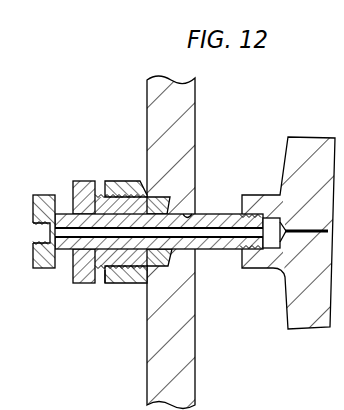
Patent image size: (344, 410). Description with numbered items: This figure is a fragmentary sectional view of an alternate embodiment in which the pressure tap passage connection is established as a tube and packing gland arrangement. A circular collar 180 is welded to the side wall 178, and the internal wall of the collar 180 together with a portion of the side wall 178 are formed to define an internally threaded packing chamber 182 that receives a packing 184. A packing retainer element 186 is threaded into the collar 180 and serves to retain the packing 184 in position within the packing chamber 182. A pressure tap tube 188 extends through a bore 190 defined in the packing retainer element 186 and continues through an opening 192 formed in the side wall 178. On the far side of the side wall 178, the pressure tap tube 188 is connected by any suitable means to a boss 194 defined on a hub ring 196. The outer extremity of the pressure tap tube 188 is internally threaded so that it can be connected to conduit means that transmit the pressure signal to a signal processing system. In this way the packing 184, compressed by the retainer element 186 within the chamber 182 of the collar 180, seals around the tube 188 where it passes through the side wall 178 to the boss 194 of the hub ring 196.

The side wall 178 is at (148, 374).
The circular collar 180 is at (115, 284).
The packing chamber 182 is at (198, 207).
The packing 184 is at (180, 266).
The packing retainer element 186 is at (85, 181).
The pressure tap tube 188 is at (63, 213).
The bore 190 is at (74, 253).
The opening 192 is at (200, 216).
The boss 194 is at (255, 269).
The hub ring 196 is at (290, 150).